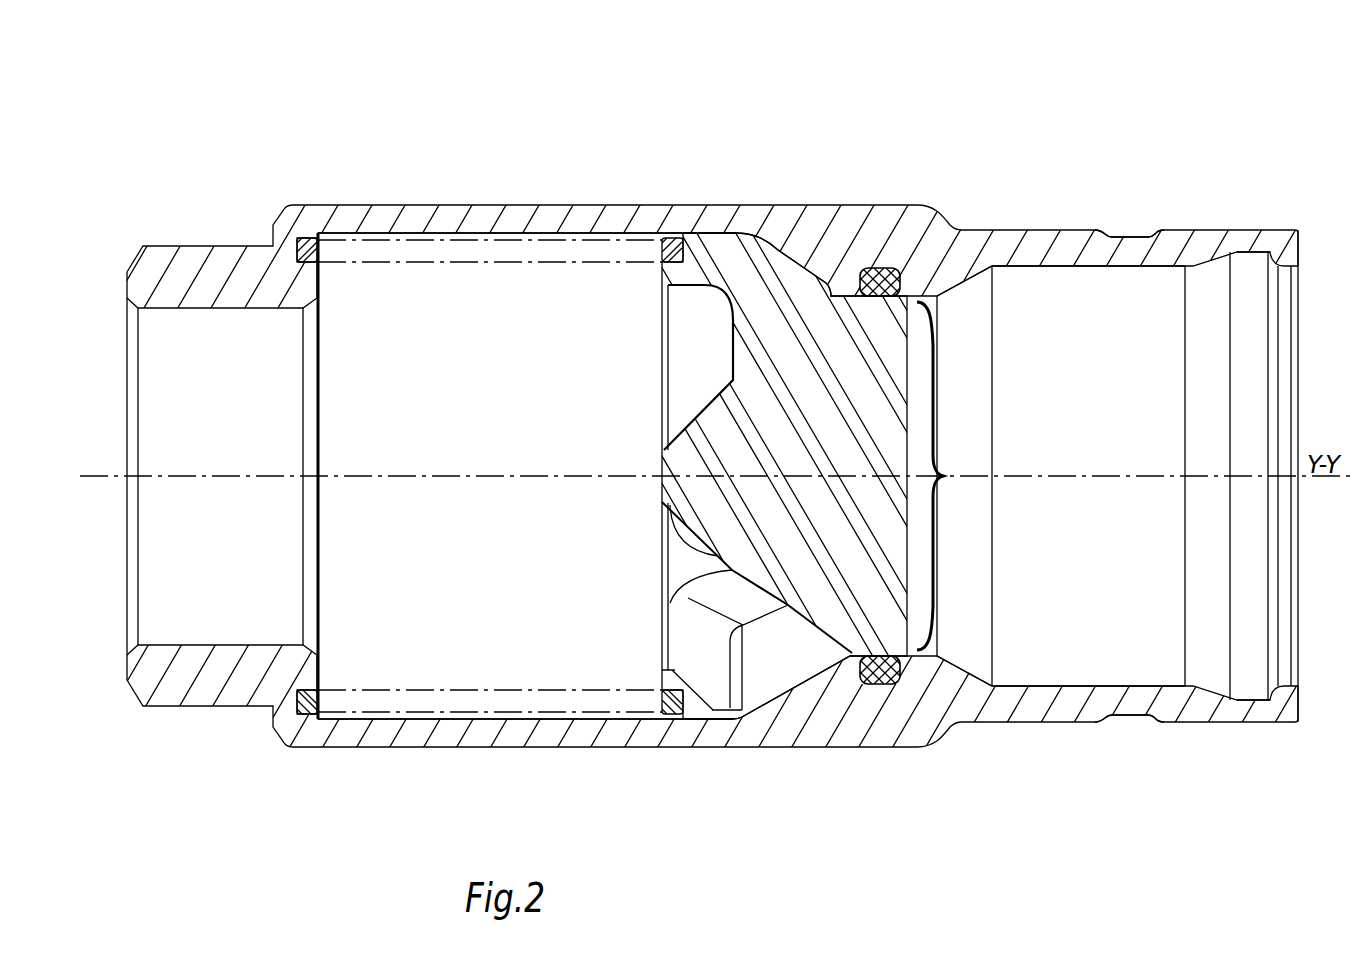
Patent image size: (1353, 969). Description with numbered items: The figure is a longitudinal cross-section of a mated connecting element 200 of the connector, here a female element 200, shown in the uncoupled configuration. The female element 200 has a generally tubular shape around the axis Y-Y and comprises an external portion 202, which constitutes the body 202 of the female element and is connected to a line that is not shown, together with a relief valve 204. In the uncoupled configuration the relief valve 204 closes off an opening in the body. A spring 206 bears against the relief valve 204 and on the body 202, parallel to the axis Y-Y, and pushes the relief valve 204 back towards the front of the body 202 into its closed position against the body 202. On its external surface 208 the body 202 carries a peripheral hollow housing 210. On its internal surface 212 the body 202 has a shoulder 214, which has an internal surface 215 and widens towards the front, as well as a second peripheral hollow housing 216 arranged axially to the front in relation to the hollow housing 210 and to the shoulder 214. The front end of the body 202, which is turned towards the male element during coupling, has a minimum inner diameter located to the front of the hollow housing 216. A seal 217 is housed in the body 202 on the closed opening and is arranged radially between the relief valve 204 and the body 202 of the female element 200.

The female element 200 is at (852, 138).
The external portion 202 is at (918, 237).
The relief valve 204 is at (755, 297).
The spring 206 is at (423, 700).
The external surface 208 is at (1212, 227).
The peripheral hollow housing 210 is at (1162, 226).
The internal surface 212 is at (1107, 268).
The shoulder 214 is at (992, 672).
The internal surface of the shoulder 215 is at (970, 288).
The peripheral hollow housing 216 is at (1247, 257).
The seal 217 is at (870, 268).